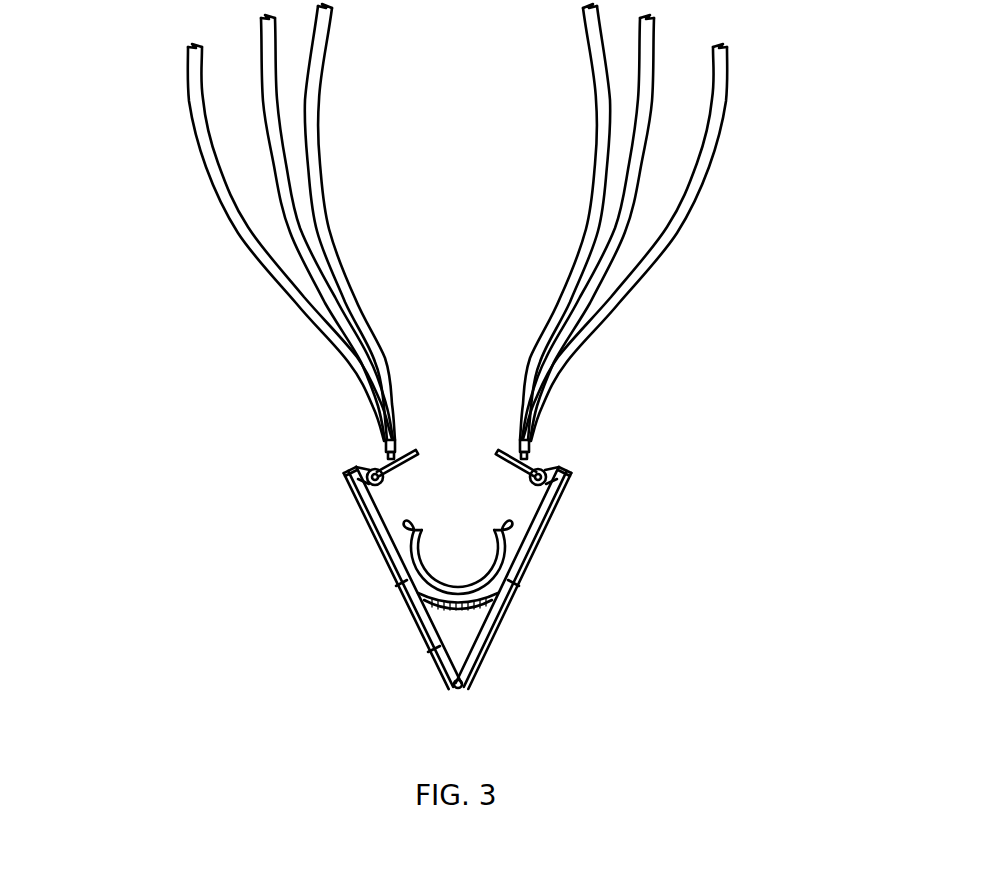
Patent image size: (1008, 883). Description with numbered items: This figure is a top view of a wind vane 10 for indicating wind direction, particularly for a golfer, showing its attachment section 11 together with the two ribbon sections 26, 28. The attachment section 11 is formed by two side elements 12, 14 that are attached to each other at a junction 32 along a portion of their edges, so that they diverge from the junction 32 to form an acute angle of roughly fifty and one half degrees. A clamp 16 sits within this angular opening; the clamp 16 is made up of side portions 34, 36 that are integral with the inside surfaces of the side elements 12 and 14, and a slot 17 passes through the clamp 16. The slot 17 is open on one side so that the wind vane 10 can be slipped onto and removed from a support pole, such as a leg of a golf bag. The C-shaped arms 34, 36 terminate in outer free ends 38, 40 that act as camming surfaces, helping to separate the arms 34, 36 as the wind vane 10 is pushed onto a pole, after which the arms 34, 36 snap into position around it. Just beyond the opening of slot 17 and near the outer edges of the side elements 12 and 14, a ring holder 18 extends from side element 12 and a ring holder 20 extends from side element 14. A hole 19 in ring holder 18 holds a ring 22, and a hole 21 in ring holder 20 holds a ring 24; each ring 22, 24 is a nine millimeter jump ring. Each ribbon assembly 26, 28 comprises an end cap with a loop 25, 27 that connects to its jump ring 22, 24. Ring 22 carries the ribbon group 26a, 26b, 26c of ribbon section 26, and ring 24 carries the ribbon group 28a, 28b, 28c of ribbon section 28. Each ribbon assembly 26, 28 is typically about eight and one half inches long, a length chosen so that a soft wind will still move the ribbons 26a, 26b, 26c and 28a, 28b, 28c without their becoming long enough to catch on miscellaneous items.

The wind vane 10 is at (566, 655).
The attachment section 11 is at (396, 630).
The side element 12 is at (373, 553).
The side element 14 is at (548, 540).
The clamp 16 is at (432, 655).
The slot 17 is at (468, 571).
The ring holder 18 is at (372, 462).
The hole 19 is at (368, 478).
The ring holder 20 is at (556, 464).
The hole 21 is at (577, 480).
The ring 22 is at (415, 450).
The ring 24 is at (500, 453).
The end cap with a loop 25 is at (378, 449).
The ribbon section 26 is at (357, 141).
The ribbon 26a is at (308, 143).
The ribbon 26b is at (263, 108).
The ribbon 26c is at (193, 103).
The end cap with a loop 27 is at (546, 450).
The ribbon section 28 is at (547, 242).
The ribbon 28a is at (722, 75).
The ribbon 28b is at (648, 112).
The ribbon 28c is at (600, 167).
The junction 32 is at (457, 692).
The side portion 34 is at (408, 578).
The side portion 36 is at (500, 578).
The outer free end 38 is at (406, 524).
The outer free end 40 is at (503, 529).